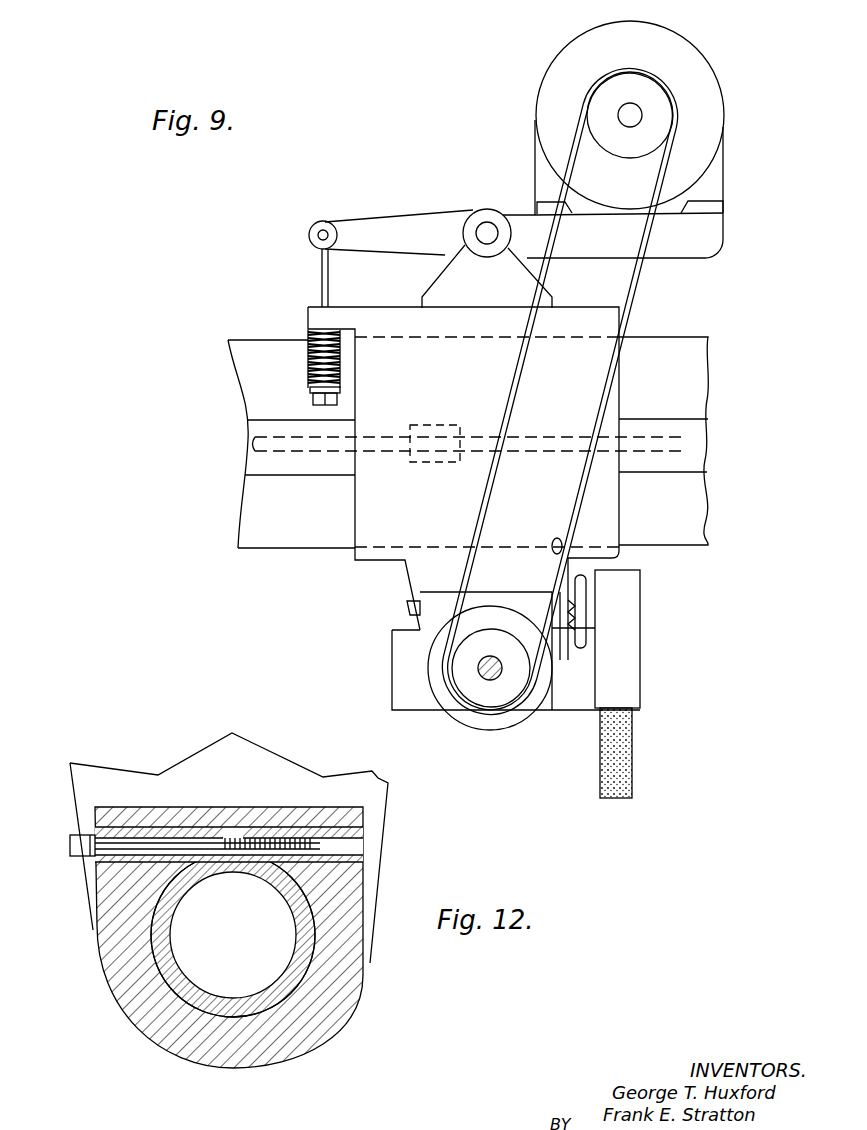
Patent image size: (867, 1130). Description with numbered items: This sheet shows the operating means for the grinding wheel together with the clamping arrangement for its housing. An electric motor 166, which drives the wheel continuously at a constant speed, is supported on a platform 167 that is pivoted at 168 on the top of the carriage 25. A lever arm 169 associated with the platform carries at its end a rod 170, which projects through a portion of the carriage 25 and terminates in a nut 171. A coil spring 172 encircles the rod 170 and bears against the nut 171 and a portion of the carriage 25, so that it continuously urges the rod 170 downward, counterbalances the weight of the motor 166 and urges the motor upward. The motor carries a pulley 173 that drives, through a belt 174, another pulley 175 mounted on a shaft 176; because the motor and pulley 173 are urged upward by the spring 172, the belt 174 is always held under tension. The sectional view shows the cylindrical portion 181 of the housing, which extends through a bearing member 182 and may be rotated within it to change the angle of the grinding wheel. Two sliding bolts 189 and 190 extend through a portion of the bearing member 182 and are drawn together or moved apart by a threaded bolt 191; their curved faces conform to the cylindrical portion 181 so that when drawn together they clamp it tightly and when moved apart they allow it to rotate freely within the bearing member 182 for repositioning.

In FIG. 9, the carriage 25 is at (428, 372).
In FIG. 9, the electric motor 166 is at (661, 35).
In FIG. 9, the platform 167 is at (707, 242).
In FIG. 9, the pivot 168 is at (485, 221).
In FIG. 9, the lever arm 169 is at (385, 226).
In FIG. 9, the rod 170 is at (318, 268).
In FIG. 9, the nut 171 is at (308, 396).
In FIG. 9, the coil spring 172 is at (310, 359).
In FIG. 9, the pulley 173 is at (650, 103).
In FIG. 9, the belt 174 is at (633, 297).
In FIG. 9, the pulley 175 is at (498, 693).
In FIG. 9, the shaft 176 is at (484, 680).
In FIG. 12, the cylindrical portion 181 is at (293, 908).
In FIG. 12, the bearing member 182 is at (352, 972).
In FIG. 12, the sliding bolt 189 is at (148, 838).
In FIG. 12, the sliding bolt 190 is at (332, 832).
In FIG. 12, the threaded bolt 191 is at (95, 858).